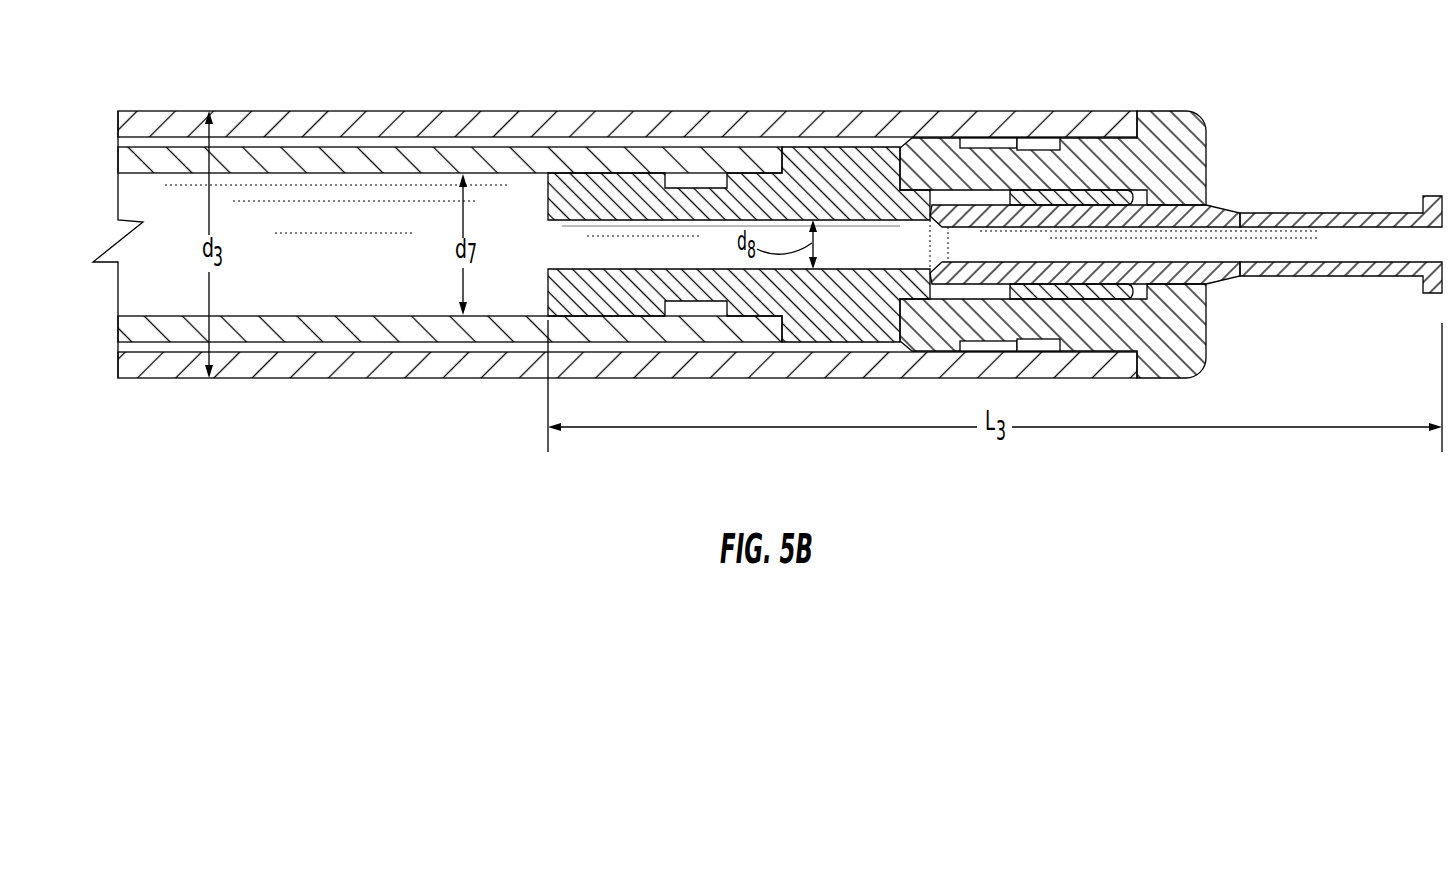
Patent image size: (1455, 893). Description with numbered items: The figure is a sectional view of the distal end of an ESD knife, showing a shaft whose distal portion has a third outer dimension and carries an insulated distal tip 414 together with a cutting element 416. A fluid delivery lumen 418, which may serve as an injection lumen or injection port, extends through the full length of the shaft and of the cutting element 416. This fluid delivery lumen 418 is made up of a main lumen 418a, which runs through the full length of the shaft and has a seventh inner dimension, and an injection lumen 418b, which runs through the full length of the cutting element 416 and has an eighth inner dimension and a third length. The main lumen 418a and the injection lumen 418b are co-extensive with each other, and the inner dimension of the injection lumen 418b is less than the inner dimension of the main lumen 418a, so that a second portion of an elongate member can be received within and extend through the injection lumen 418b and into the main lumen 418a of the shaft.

The insulated distal tip 414 is at (1170, 126).
The cutting element 416 is at (1348, 213).
The fluid delivery lumen 418 is at (505, 297).
The main lumen 418a is at (520, 187).
The injection lumen 418b is at (865, 237).